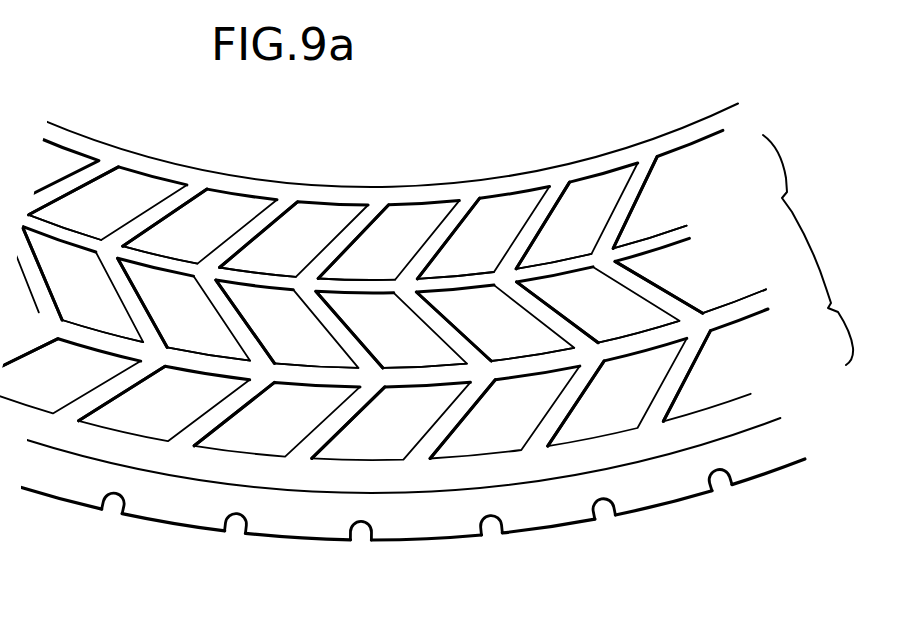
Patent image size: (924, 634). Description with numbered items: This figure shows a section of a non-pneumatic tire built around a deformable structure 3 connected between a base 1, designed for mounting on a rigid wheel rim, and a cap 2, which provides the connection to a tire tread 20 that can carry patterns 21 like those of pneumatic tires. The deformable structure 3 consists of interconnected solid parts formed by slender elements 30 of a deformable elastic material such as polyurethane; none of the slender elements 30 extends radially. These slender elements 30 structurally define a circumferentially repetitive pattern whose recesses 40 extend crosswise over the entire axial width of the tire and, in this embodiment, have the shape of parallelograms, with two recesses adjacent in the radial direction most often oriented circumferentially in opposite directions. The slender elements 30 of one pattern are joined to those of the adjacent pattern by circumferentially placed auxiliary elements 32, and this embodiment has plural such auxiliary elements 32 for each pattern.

The base 1 is at (728, 122).
The cap 2 is at (748, 416).
The deformable structure 3 is at (800, 204).
The tire tread 20 is at (97, 508).
The patterns 21 is at (233, 535).
The slender elements 30 is at (143, 297).
The auxiliary elements 32 is at (293, 283).
The recesses 40 is at (558, 227).